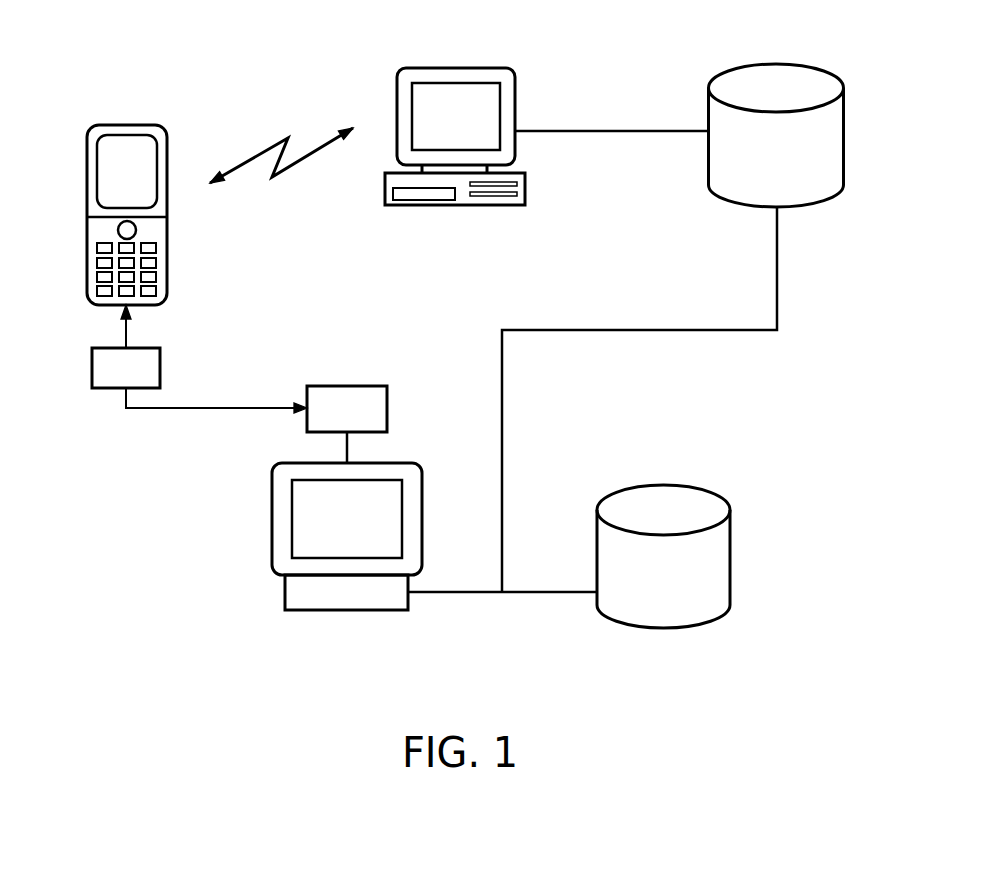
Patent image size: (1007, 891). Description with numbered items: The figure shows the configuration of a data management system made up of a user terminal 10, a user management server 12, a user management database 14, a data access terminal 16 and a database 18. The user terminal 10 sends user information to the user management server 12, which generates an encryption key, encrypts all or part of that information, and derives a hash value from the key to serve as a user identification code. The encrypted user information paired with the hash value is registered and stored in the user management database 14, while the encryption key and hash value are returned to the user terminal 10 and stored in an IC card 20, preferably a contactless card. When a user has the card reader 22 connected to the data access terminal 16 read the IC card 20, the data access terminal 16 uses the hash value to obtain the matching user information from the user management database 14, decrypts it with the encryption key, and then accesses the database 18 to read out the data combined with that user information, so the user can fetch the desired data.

The user terminal 10 is at (135, 124).
The user management server 12 is at (448, 68).
The user management database 14 is at (845, 128).
The data access terminal 16 is at (285, 592).
The database 18 is at (732, 561).
The IC card 20 is at (92, 367).
The card reader 22 is at (347, 386).